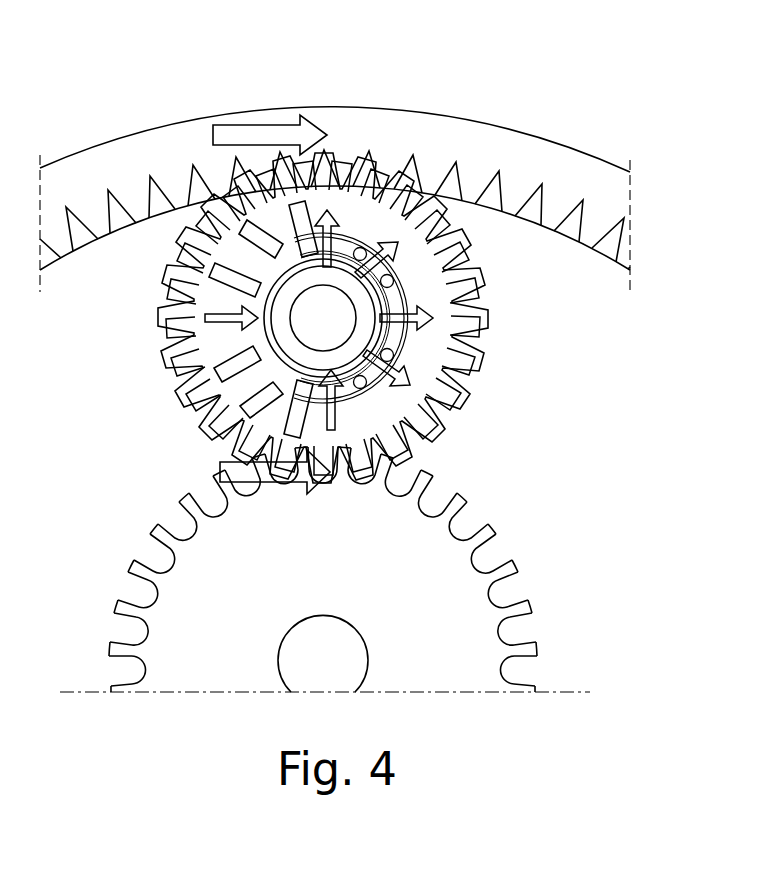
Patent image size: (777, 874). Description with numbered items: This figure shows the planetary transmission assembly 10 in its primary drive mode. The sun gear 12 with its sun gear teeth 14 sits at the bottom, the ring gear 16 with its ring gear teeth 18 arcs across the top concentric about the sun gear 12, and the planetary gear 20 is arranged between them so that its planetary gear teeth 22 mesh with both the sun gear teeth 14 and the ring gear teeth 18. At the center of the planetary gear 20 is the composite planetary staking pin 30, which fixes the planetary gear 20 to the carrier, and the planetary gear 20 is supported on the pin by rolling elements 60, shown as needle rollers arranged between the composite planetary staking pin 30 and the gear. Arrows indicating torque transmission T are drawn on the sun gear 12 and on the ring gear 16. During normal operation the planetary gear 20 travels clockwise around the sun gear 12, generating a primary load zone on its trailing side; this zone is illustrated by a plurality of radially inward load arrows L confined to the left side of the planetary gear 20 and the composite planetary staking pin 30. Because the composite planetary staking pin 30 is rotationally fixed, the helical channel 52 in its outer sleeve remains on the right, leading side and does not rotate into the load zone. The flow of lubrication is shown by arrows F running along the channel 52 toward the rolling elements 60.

The planetary transmission assembly 10 is at (168, 95).
The sun gear 12 is at (470, 608).
The sun gear teeth 14 is at (455, 505).
The ring gear 16 is at (492, 150).
The ring gear teeth 18 is at (555, 207).
The planetary gear 20 is at (458, 372).
The planetary gear teeth 22 is at (460, 255).
The composite planetary staking pin 30 is at (173, 367).
The helical channel 52 is at (470, 303).
The rolling elements 60 is at (362, 243).
The lubricant flow path F is at (412, 390).
The torque transmission T is at (215, 470).
The load arrows L is at (180, 405).